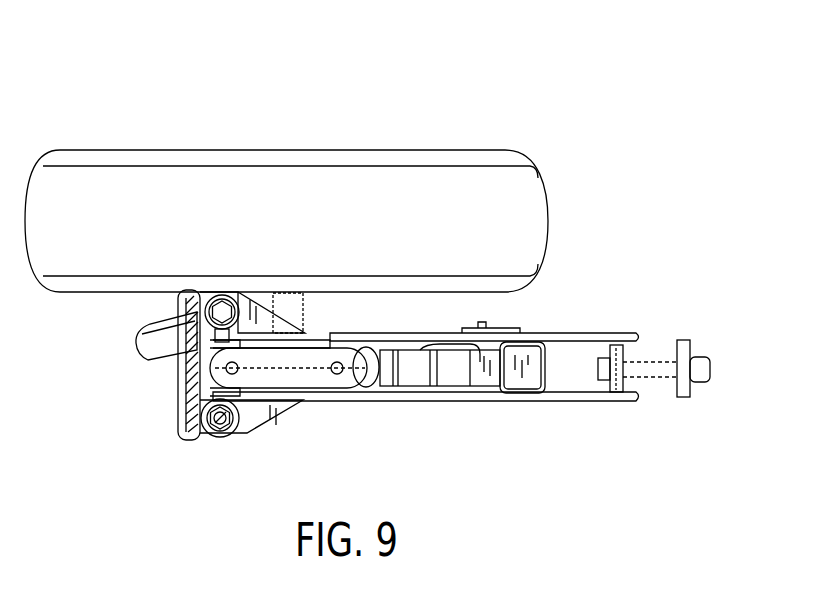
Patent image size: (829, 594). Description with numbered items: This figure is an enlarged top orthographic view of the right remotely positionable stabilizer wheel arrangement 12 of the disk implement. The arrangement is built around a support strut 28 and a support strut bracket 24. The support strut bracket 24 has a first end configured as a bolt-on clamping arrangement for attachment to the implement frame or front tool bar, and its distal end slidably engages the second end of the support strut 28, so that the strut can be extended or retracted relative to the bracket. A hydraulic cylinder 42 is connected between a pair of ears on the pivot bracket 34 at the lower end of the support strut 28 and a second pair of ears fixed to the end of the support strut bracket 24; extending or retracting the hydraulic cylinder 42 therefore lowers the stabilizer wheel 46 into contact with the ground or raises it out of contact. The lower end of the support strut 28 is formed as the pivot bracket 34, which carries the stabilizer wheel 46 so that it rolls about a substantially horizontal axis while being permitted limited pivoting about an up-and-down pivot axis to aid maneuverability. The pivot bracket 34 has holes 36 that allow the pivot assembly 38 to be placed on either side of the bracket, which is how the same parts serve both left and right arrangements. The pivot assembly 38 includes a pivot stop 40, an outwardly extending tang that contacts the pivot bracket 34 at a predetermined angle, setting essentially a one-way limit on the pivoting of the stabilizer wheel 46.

The remotely positionable stabilizer wheel arrangement 12 is at (612, 264).
The support strut bracket 24 is at (513, 403).
The support strut 28 is at (458, 382).
The pivot bracket 34 is at (248, 423).
The holes 36 is at (216, 440).
The pivot assembly 38 is at (238, 297).
The pivot stop 40 is at (150, 352).
The hydraulic cylinder 42 is at (372, 392).
The stabilizer wheel 46 is at (199, 172).